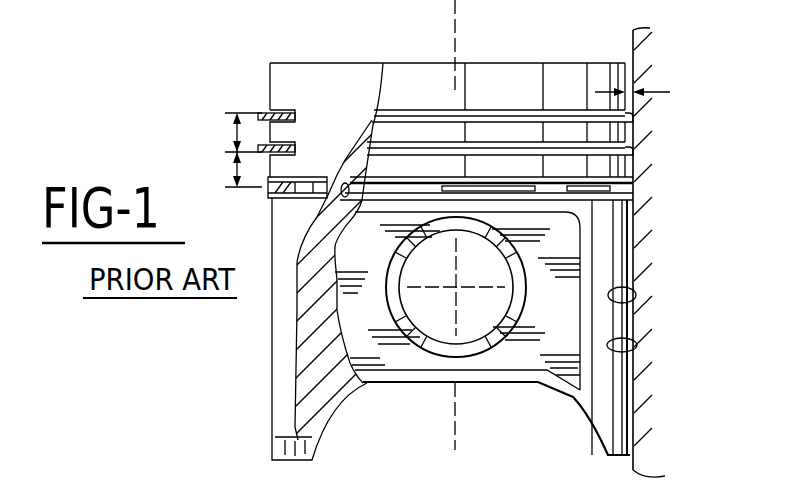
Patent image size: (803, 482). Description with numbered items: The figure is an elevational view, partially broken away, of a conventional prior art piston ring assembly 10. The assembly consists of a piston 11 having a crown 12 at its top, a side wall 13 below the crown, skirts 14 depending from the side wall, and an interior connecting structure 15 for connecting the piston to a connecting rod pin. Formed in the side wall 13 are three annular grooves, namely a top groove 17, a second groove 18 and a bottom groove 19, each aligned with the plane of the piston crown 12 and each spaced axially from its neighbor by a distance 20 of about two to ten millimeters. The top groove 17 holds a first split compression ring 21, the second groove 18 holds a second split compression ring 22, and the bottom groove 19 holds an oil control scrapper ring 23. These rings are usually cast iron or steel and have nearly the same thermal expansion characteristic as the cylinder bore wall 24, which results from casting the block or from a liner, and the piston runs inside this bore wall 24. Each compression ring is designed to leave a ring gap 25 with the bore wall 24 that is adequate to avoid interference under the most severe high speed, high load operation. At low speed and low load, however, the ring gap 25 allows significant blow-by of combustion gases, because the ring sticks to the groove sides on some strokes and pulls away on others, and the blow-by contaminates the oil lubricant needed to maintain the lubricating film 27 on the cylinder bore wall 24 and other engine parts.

The piston ring assembly 10 is at (396, 50).
The piston 11 is at (360, 83).
The crown 12 is at (277, 63).
The side wall 13 is at (270, 87).
The skirts 14 is at (272, 400).
The interior connecting structure 15 is at (503, 358).
The top groove 17 is at (636, 122).
The second groove 18 is at (636, 160).
The bottom groove 19 is at (636, 193).
The axial spacing distance 20 is at (228, 130).
The first split compression ring 21 is at (292, 110).
The second split compression ring 22 is at (292, 147).
The oil control scrapper ring 23 is at (268, 200).
The bore wall 24 is at (637, 348).
The ring gap 25 is at (660, 92).
The lubricating film 27 is at (637, 303).